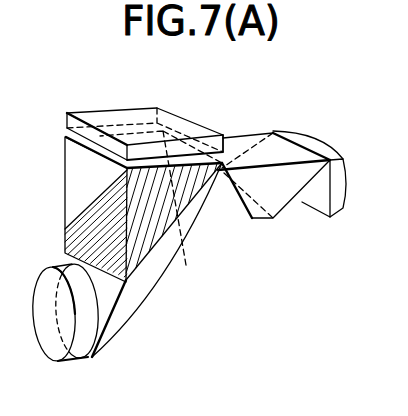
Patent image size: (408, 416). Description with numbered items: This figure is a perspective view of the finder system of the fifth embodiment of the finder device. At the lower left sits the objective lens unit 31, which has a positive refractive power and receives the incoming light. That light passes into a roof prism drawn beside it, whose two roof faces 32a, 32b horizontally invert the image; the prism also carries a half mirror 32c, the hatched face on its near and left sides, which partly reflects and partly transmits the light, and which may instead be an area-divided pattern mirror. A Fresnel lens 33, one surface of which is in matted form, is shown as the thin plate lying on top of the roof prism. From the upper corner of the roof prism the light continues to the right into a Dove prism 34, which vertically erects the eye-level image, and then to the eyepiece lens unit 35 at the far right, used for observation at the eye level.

The objective lens unit 31 is at (47, 358).
The roof face 32a is at (182, 268).
The roof face 32b is at (158, 276).
The half mirror 32c is at (97, 218).
The Fresnel lens 33 is at (185, 123).
The Dove prism 34 is at (276, 203).
The eyepiece lens unit 35 is at (338, 210).